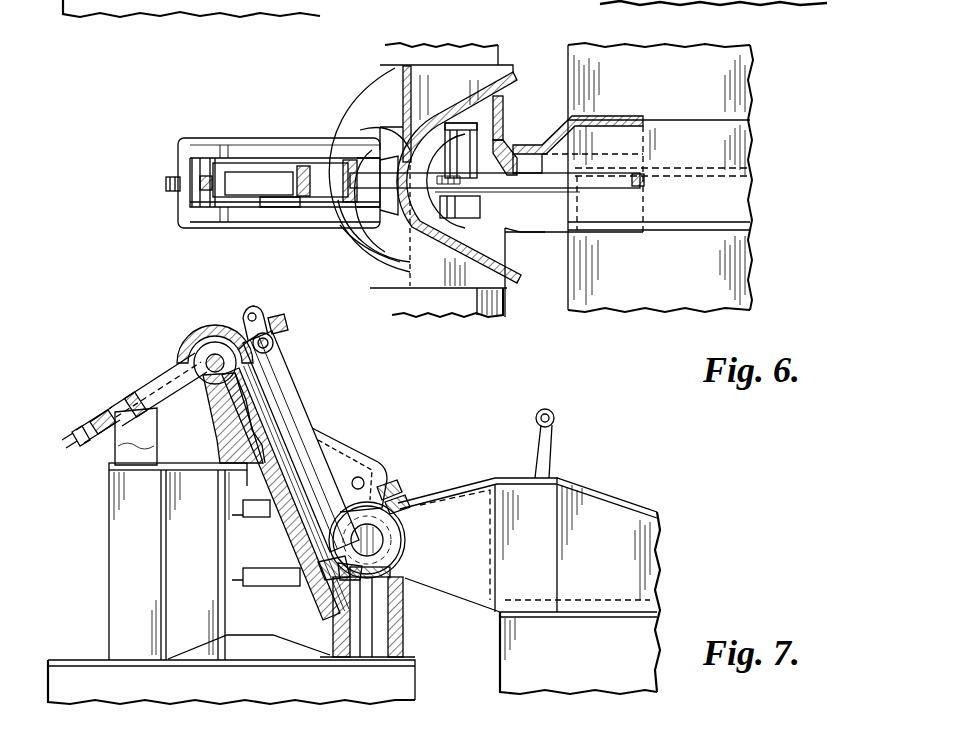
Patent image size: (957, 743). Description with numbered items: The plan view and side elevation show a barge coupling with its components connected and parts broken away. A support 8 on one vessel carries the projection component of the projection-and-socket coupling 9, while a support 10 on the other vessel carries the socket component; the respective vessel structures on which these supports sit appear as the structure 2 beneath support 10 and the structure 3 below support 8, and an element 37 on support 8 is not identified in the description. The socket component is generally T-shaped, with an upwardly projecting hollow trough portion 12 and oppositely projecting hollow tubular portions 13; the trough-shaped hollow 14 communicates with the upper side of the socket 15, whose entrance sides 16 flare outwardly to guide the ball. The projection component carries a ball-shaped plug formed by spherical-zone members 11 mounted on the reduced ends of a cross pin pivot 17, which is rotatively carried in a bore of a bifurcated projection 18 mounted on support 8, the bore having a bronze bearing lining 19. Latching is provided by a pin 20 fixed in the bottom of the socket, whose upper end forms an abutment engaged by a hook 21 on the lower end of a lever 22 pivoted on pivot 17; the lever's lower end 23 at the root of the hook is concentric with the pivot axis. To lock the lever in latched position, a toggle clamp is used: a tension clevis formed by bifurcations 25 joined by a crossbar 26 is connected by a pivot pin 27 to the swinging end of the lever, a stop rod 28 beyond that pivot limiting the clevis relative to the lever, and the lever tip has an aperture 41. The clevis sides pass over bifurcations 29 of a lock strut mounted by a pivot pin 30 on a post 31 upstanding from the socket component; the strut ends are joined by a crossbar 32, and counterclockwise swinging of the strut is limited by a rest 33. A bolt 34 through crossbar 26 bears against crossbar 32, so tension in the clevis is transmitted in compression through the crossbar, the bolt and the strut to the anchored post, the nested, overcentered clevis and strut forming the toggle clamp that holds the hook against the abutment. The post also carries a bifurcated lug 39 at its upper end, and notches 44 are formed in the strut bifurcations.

In FIG. 6, the base plate / foundation 2 is at (507, 307).
In FIG. 7, the base plate / foundation 2 is at (85, 675).
In FIG. 6, the trough bottom 3 is at (740, 247).
In FIG. 7, the trough bottom 3 is at (645, 615).
In FIG. 6, the support 8 is at (738, 130).
In FIG. 7, the support 8 is at (610, 508).
In FIG. 6, the projection-and-socket coupling 9 is at (346, 80).
In FIG. 7, the projection-and-socket coupling 9 is at (395, 442).
In FIG. 6, the support 10 is at (205, 232).
In FIG. 7, the support 10 is at (118, 548).
In FIG. 6, the spherical zone members 11 is at (500, 222).
In FIG. 7, the spherical zone members 11 is at (375, 470).
In FIG. 6, the hollow trough portion 12 is at (352, 150).
In FIG. 7, the hollow trough portion 12 is at (335, 440).
In FIG. 6, the hollow tubular portions 13 is at (418, 70).
In FIG. 6, the trough-shaped hollow 14 is at (362, 220).
In FIG. 7, the trough-shaped hollow 14 is at (262, 405).
In FIG. 7, the socket 15 is at (382, 592).
In FIG. 6, the flared entrance sides 16 is at (492, 145).
In FIG. 7, the flared entrance sides 16 is at (402, 496).
In FIG. 6, the cross pin pivot 17 is at (472, 140).
In FIG. 7, the cross pin pivot 17 is at (372, 545).
In FIG. 6, the projection 18 is at (512, 230).
In FIG. 7, the projection 18 is at (395, 605).
In FIG. 6, the bearing lining 19 is at (500, 148).
In FIG. 7, the pin 20 is at (378, 648).
In FIG. 7, the hook 21 is at (330, 596).
In FIG. 6, the lever 22 is at (360, 240).
In FIG. 7, the lever 22 is at (298, 423).
In FIG. 7, the lower end of lever 23 is at (342, 595).
In FIG. 6, the bifurcations 25 is at (252, 157).
In FIG. 7, the bifurcations 25 is at (240, 350).
In FIG. 6, the crossbar 26 is at (192, 172).
In FIG. 7, the crossbar 26 is at (95, 413).
In FIG. 6, the pivot pin 27 is at (340, 130).
In FIG. 7, the pivot pin 27 is at (275, 343).
In FIG. 6, the stop rod 28 is at (370, 150).
In FIG. 7, the stop rod 28 is at (282, 326).
In FIG. 6, the bifurcations of lock strut 29 is at (230, 165).
In FIG. 7, the bifurcations of lock strut 29 is at (155, 395).
In FIG. 6, the pivot pin 30 is at (312, 192).
In FIG. 7, the pivot pin 30 is at (210, 360).
In FIG. 6, the post 31 is at (280, 200).
In FIG. 7, the post 31 is at (226, 422).
In FIG. 6, the crossbar 32 is at (210, 190).
In FIG. 7, the crossbar 32 is at (120, 400).
In FIG. 7, the rest 33 is at (118, 452).
In FIG. 6, the bolt 34 is at (168, 190).
In FIG. 7, the bolt 34 is at (70, 442).
In FIG. 6, the pawl / lug 37 is at (647, 182).
In FIG. 7, the pawl / lug 37 is at (552, 428).
In FIG. 6, the bifurcated lug 39 is at (284, 180).
In FIG. 7, the bifurcated lug 39 is at (185, 368).
In FIG. 6, the aperture 41 is at (340, 205).
In FIG. 7, the aperture 41 is at (258, 320).
In FIG. 7, the notches 44 is at (203, 410).